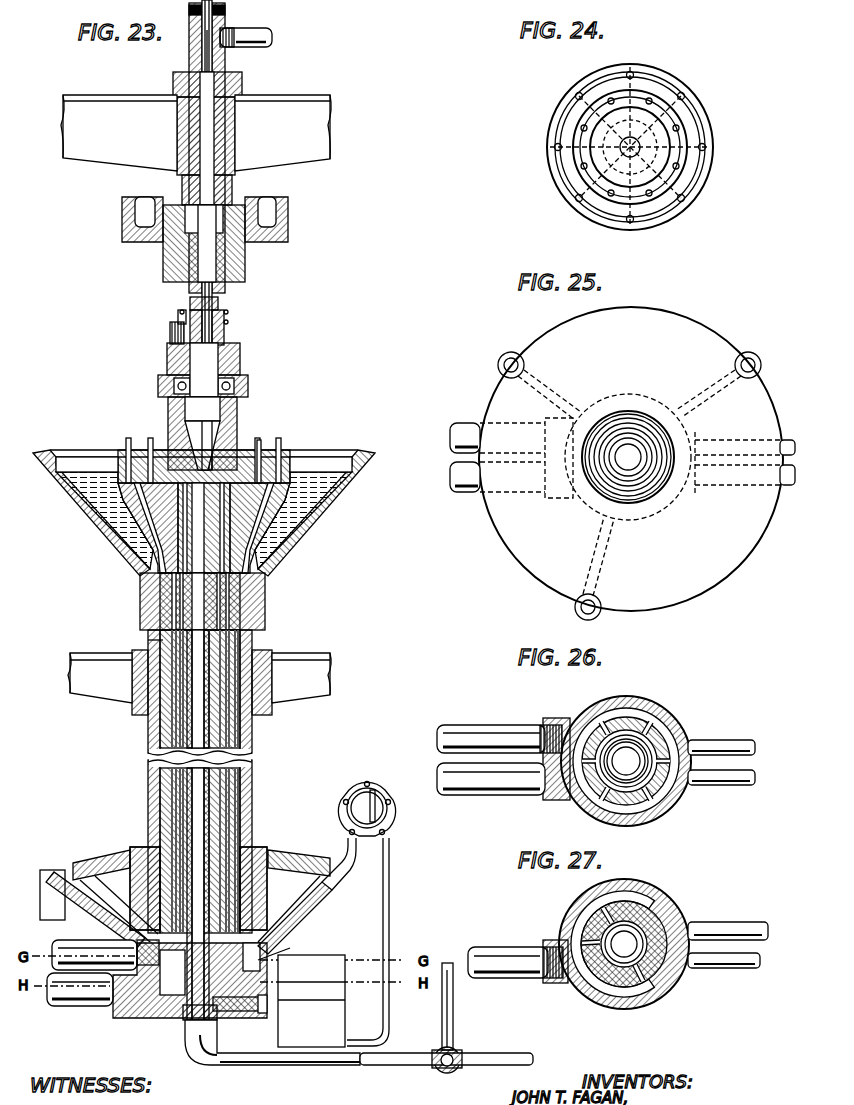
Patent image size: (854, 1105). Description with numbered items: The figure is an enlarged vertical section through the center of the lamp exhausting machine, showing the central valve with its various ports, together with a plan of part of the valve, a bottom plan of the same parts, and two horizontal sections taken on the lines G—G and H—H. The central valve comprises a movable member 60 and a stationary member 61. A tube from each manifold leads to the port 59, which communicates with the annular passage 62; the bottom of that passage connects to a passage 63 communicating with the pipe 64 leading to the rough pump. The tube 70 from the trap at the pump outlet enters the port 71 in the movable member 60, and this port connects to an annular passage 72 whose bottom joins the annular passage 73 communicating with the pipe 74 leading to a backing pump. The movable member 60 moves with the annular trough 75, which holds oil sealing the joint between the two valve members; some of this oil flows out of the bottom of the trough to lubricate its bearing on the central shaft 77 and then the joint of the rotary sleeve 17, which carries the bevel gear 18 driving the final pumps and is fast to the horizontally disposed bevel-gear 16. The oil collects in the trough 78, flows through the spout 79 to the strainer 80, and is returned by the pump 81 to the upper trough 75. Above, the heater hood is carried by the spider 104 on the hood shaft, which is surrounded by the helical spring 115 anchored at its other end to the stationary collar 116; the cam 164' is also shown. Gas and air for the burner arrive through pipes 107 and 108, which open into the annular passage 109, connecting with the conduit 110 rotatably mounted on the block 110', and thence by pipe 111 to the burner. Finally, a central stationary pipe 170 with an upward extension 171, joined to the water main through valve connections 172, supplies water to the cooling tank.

In FIG. 23, the pipe 111 is at (272, 38).
In FIG. 23, the upward extension 171 is at (209, 61).
In FIG. 23, the spider 104 is at (330, 140).
In FIG. 23, the cam 164' is at (228, 239).
In FIG. 23, the helical spring 115 is at (180, 312).
In FIG. 23, the stationary collar 116 is at (172, 332).
In FIG. 23, the conduit 110 is at (245, 307).
In FIG. 23, the block 110' is at (222, 370).
In FIG. 23, the tube 70 is at (268, 440).
In FIG. 23, the port 59 is at (258, 440).
In FIG. 24, the port 59 is at (611, 196).
In FIG. 23, the movable member 60 is at (284, 456).
In FIG. 24, the movable member 60 is at (583, 201).
In FIG. 23, the port 71 is at (300, 462).
In FIG. 23, the annular trough 75 is at (340, 500).
In FIG. 23, the stationary member 61 is at (272, 520).
In FIG. 24, the stationary member 61 is at (668, 222).
In FIG. 23, the annular passage 72 is at (246, 590).
In FIG. 23, the annular passage 62 is at (226, 606).
In FIG. 23, the central shaft 77 is at (149, 638).
In FIG. 23, the bevel gear 18 is at (332, 660).
In FIG. 23, the annular passage 109 is at (226, 784).
In FIG. 27, the annular passage 109 is at (598, 918).
In FIG. 23, the rotary sleeve 17 is at (149, 798).
In FIG. 23, the central stationary pipe 170 is at (205, 826).
In FIG. 23, the bevel-gear 16 is at (82, 862).
In FIG. 23, the annular passage 73 is at (143, 938).
In FIG. 26, the annular passage 73 is at (642, 710).
In FIG. 23, the pipe 74 is at (56, 950).
In FIG. 26, the pipe 74 is at (482, 724).
In FIG. 23, the trough 78 is at (318, 908).
In FIG. 25, the trough 78 is at (729, 571).
In FIG. 23, the spout 79 is at (290, 950).
In FIG. 23, the pump 81 is at (375, 784).
In FIG. 23, the strainer 80 is at (346, 1004).
In FIG. 23, the pipe 64 is at (96, 1008).
In FIG. 26, the pipe 64 is at (490, 796).
In FIG. 27, the pipe 64 is at (478, 974).
In FIG. 23, the passage 63 is at (165, 1012).
In FIG. 27, the passage 63 is at (638, 1009).
In FIG. 23, the valve connections 172 is at (456, 1046).
In FIG. 26, the pipe 108 is at (734, 740).
In FIG. 27, the pipe 108 is at (750, 922).
In FIG. 26, the pipe 107 is at (740, 786).
In FIG. 27, the pipe 107 is at (718, 1045).